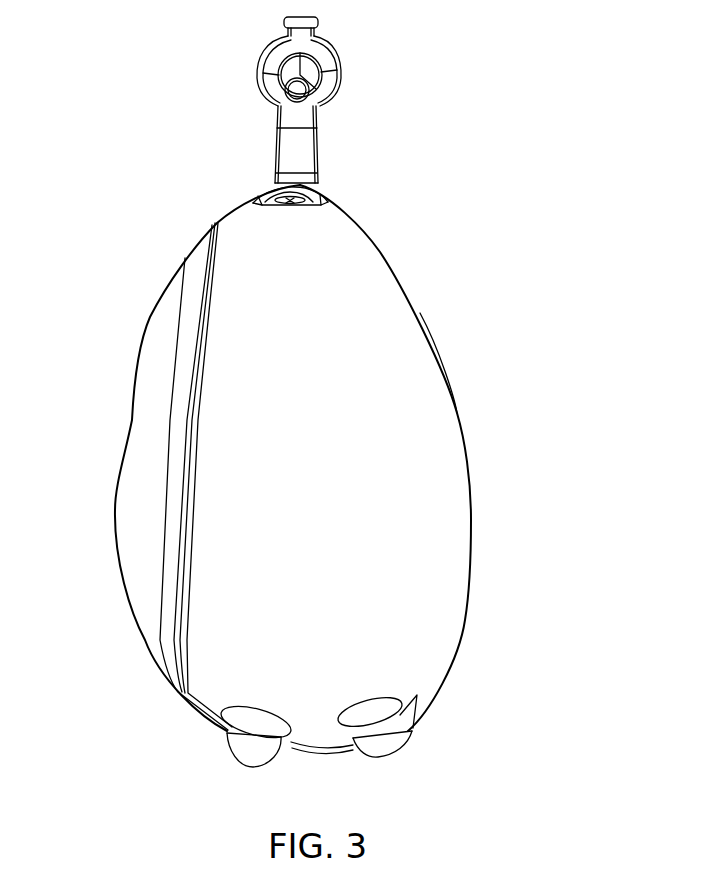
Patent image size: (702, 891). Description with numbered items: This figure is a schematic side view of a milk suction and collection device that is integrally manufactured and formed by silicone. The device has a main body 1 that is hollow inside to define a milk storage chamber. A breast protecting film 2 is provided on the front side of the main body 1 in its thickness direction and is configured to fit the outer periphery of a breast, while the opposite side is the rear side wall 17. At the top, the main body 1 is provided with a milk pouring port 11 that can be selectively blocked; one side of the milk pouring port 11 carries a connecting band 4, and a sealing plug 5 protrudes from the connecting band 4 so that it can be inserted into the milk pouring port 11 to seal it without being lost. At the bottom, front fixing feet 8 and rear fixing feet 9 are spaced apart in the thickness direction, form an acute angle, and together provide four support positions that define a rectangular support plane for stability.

The main body 1 is at (429, 663).
The breast protecting film 2 is at (143, 515).
The connecting band 4 is at (302, 143).
The sealing plug 5 is at (322, 72).
The front fixing feet 8 is at (250, 753).
The rear fixing feet 9 is at (392, 734).
The milk pouring port 11 is at (320, 190).
The rear side wall 17 is at (467, 458).